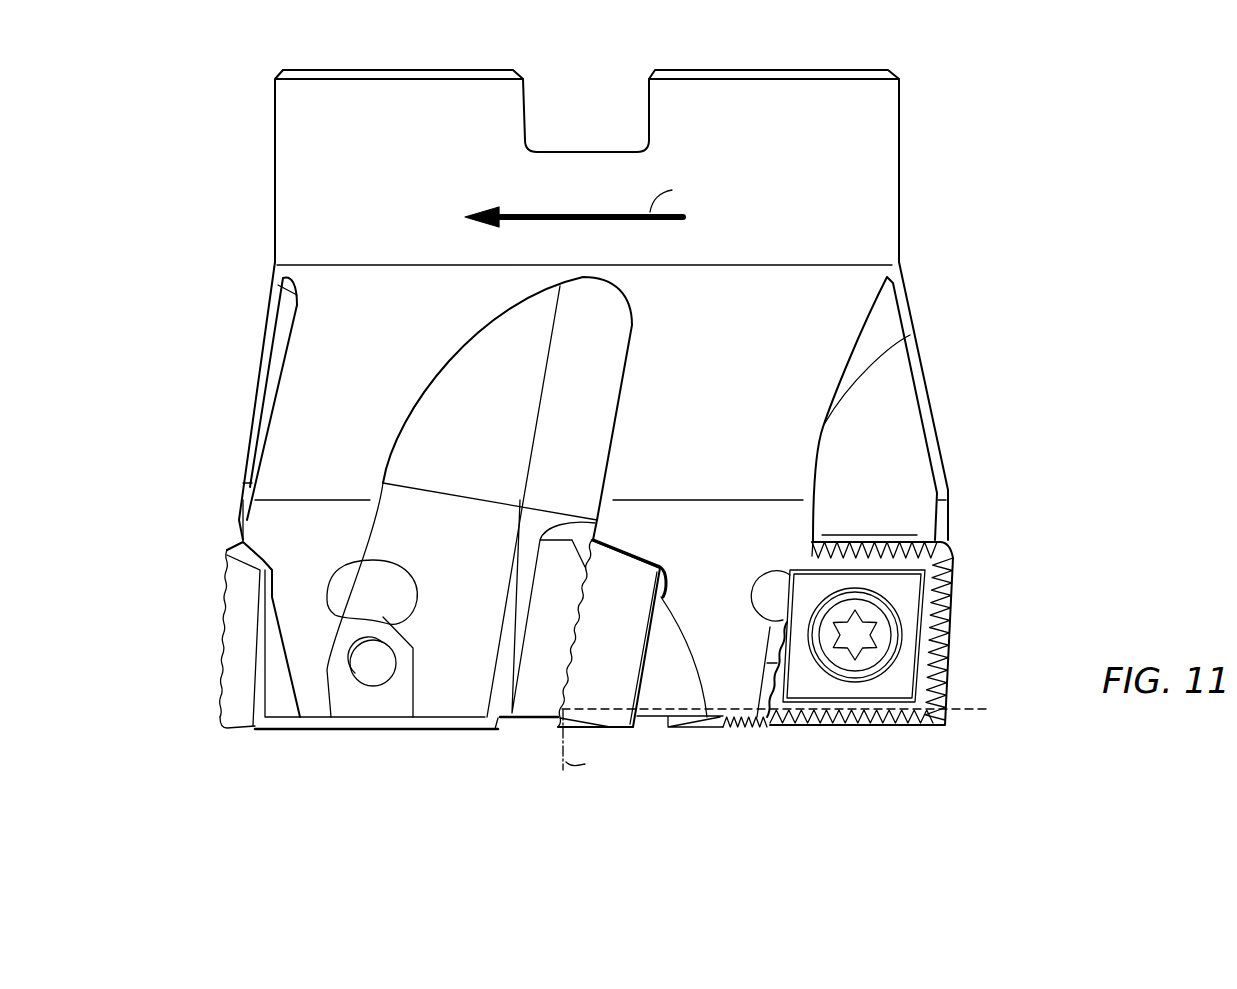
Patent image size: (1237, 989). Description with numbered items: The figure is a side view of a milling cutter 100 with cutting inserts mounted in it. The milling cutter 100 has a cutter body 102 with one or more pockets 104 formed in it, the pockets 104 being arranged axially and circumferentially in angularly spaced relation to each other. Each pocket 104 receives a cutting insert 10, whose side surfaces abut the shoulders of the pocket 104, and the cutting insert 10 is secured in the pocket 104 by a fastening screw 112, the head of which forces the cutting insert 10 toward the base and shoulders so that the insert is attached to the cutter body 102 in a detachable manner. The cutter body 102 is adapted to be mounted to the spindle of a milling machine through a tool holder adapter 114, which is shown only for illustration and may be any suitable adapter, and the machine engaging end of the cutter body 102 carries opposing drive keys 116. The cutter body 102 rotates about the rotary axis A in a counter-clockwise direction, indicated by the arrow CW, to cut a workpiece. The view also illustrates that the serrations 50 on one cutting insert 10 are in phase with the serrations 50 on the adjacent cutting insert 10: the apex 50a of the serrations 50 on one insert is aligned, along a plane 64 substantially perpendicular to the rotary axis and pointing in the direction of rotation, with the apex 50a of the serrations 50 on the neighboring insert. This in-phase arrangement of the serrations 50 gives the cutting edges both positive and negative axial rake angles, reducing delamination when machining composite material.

The milling cutter 100 is at (1053, 62).
The cutter body 102 is at (232, 337).
The pocket 104 is at (636, 551).
The fastening screw 112 is at (870, 613).
The tool holder adapter 114 is at (903, 163).
The drive key 116 is at (649, 108).
The cutting insert 10 is at (966, 634).
The serrations 50 is at (556, 709).
The apex of the serrations 50a is at (562, 710).
The plane 64 is at (663, 710).